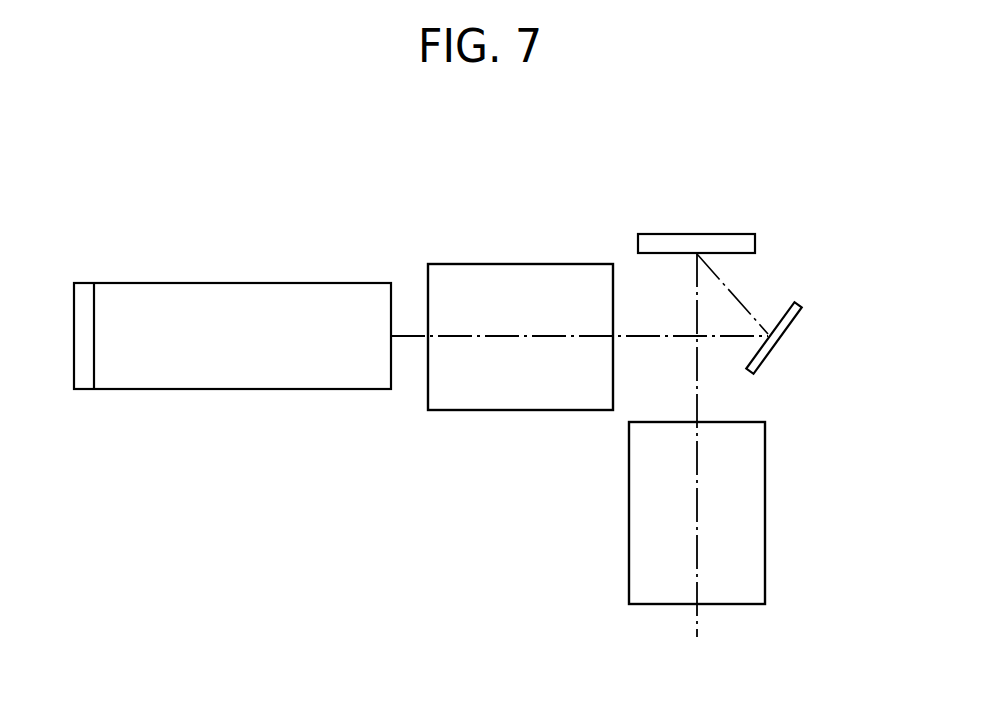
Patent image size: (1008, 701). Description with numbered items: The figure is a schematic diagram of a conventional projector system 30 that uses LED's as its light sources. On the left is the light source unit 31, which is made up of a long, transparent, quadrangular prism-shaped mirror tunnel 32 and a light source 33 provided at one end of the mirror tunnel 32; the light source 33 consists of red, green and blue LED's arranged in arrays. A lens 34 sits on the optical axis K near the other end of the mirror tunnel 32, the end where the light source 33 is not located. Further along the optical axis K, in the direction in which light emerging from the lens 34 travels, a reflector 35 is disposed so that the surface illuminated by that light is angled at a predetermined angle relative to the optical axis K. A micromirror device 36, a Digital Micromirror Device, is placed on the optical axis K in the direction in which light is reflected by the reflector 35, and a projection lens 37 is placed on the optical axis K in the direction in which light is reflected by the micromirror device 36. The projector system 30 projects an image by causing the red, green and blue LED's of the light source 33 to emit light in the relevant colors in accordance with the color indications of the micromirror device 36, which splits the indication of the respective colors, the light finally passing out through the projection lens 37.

The projector system 30 is at (564, 170).
The light source unit 31 is at (230, 214).
The mirror tunnel 32 is at (342, 283).
The light source 33 is at (88, 283).
The lens 34 is at (573, 264).
The reflector 35 is at (797, 302).
The micromirror device 36 is at (733, 234).
The projection lens 37 is at (766, 475).
The optical axis K is at (411, 340).